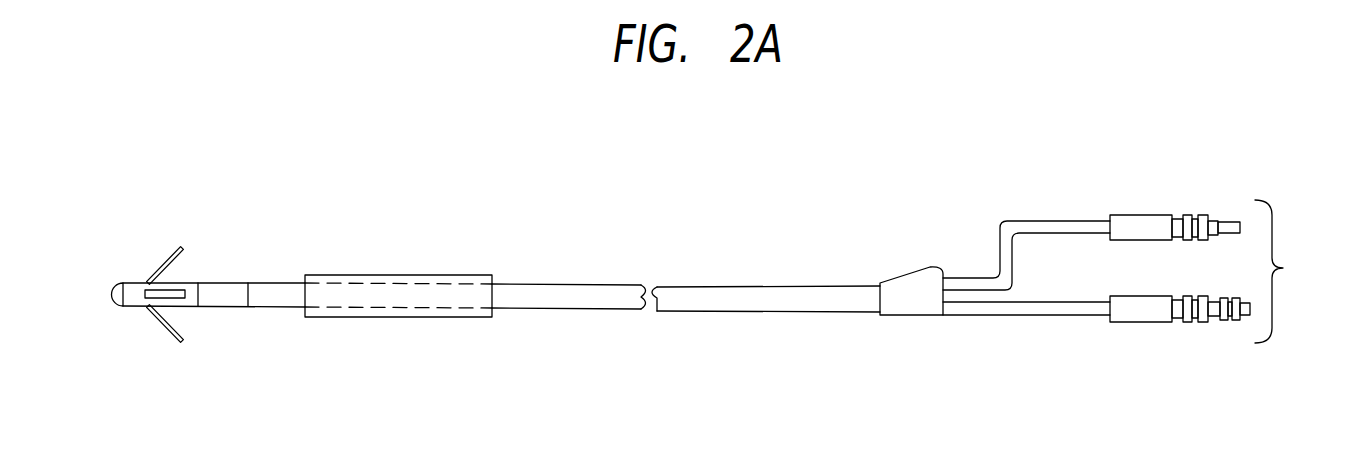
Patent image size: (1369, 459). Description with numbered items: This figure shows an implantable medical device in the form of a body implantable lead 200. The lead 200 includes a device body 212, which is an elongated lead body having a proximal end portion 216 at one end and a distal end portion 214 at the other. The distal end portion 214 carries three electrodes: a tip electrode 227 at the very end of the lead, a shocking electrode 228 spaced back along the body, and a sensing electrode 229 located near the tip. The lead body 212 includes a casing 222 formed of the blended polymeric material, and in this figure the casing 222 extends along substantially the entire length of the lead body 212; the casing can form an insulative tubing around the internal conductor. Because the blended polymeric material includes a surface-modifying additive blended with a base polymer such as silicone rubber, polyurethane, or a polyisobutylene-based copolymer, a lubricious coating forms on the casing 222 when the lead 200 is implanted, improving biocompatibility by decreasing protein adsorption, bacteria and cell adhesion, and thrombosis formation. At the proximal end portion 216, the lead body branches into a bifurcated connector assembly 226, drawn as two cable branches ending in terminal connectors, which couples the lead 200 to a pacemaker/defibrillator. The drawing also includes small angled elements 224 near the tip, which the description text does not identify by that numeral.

The body implantable lead 200 is at (562, 200).
The device body 212 is at (620, 277).
The distal end portion 214 is at (238, 274).
The proximal end portion 216 is at (978, 220).
The casing 222 is at (698, 285).
The fixation tines 224 is at (160, 252).
The bifurcated connector assembly 226 is at (1226, 271).
The tip electrode 227 is at (120, 305).
The shocking electrode 228 is at (400, 274).
The sensing electrode 229 is at (220, 307).